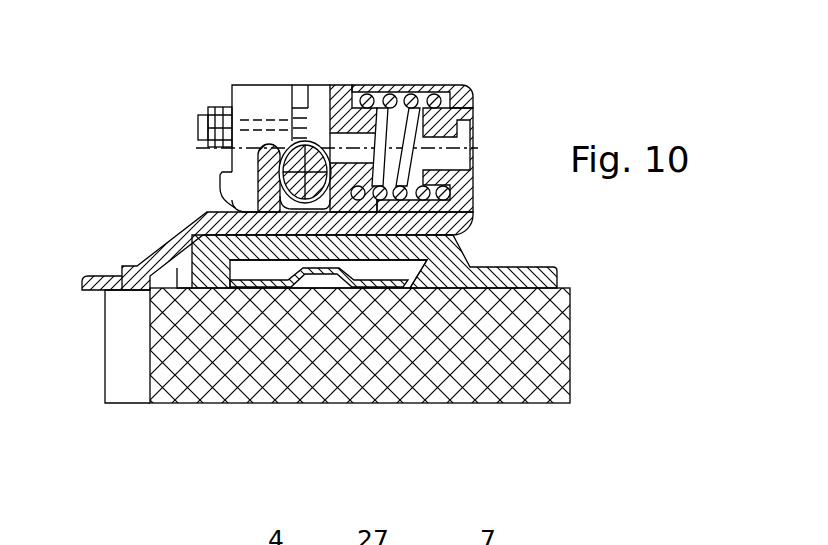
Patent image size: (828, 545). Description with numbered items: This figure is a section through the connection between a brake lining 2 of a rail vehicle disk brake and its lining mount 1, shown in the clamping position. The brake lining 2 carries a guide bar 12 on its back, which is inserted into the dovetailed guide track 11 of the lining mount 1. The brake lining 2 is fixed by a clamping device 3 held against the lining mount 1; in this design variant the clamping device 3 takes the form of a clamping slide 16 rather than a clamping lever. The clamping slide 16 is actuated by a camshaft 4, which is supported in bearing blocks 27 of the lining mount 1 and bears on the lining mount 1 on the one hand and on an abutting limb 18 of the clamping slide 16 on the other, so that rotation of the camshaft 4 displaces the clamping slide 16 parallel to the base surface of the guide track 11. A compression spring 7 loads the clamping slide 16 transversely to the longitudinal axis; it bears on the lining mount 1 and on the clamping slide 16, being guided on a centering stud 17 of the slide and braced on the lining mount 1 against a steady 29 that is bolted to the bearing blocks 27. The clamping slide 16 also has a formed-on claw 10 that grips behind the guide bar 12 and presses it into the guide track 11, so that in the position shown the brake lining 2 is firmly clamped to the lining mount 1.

The lining mount 1 is at (443, 278).
The brake lining 2 is at (170, 380).
The clamping device 3 is at (228, 203).
The camshaft 4 is at (307, 167).
The compression spring 7 is at (420, 96).
The claw 10 is at (178, 288).
The guide track 11 is at (383, 268).
The guide bar 12 is at (365, 290).
The clamping slide 16 is at (177, 230).
The centering stud 17 is at (458, 122).
The abutting limb 18 is at (273, 158).
The bearing block 27 is at (270, 112).
The steady 29 is at (355, 88).